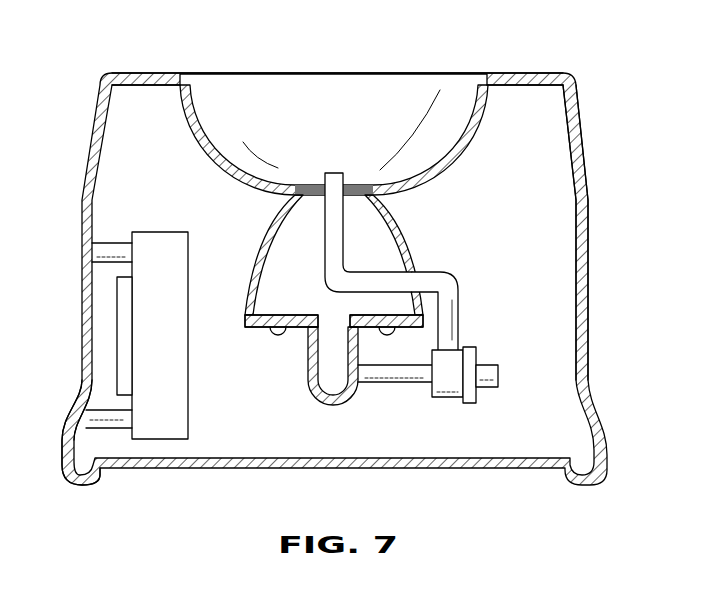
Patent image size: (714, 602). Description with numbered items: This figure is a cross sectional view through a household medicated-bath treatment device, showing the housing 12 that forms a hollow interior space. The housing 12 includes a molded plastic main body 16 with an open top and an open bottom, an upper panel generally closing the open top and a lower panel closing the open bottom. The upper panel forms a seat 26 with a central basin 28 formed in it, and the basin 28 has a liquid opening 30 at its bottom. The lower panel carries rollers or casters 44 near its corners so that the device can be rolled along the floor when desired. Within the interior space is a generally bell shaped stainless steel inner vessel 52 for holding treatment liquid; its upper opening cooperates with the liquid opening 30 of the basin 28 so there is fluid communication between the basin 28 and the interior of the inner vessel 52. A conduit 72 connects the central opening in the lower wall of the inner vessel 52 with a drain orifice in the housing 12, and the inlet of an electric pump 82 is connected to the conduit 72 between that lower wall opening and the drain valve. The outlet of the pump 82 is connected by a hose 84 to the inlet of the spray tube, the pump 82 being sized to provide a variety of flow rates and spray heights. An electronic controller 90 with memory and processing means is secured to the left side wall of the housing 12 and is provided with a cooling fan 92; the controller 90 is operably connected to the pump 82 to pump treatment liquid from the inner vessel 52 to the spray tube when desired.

The housing 12 is at (95, 112).
The main body 16 is at (588, 213).
The seat 26 is at (126, 73).
The basin 28 is at (204, 132).
The liquid opening 30 is at (292, 185).
The rollers or casters 44 is at (278, 336).
The inner container or vessel 52 is at (405, 228).
The tube or conduit 72 is at (330, 406).
The electric pump 82 is at (447, 398).
The hose 84 is at (458, 305).
The electronic controller 90 is at (157, 232).
The cooling fan 92 is at (117, 334).